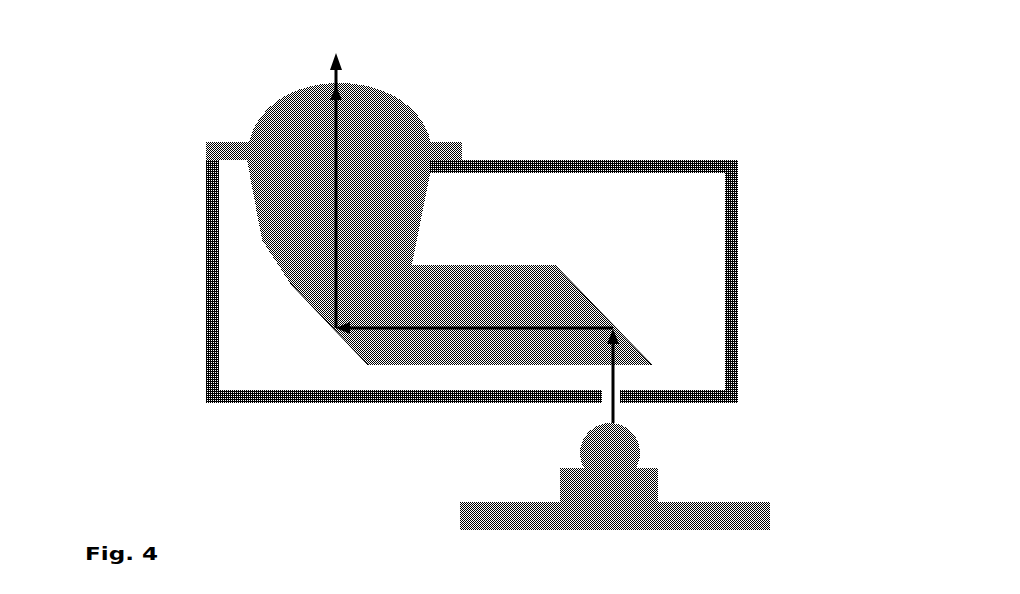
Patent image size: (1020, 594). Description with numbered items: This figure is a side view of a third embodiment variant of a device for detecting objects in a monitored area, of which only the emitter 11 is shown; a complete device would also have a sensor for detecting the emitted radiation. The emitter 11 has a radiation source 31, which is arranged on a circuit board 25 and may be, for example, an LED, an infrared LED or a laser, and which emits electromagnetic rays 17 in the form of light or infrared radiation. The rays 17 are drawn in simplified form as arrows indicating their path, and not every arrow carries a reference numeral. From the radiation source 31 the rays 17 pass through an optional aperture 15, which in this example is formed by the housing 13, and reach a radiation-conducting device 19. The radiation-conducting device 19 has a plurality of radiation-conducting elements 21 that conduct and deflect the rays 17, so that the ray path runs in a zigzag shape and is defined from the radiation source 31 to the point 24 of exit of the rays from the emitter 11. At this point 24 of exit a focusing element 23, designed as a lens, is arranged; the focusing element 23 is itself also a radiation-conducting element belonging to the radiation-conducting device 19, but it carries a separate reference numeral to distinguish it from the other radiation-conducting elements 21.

The emitter 11 is at (173, 147).
The housing 13 is at (738, 190).
The aperture 15 is at (619, 407).
The rays 17 is at (340, 62).
The radiation-conducting device 19 is at (600, 275).
The radiation-conducting element 21 is at (292, 287).
The focusing element 23 is at (428, 114).
The point of exit 24 is at (333, 73).
The circuit board 25 is at (703, 502).
The radiation source 31 is at (603, 467).